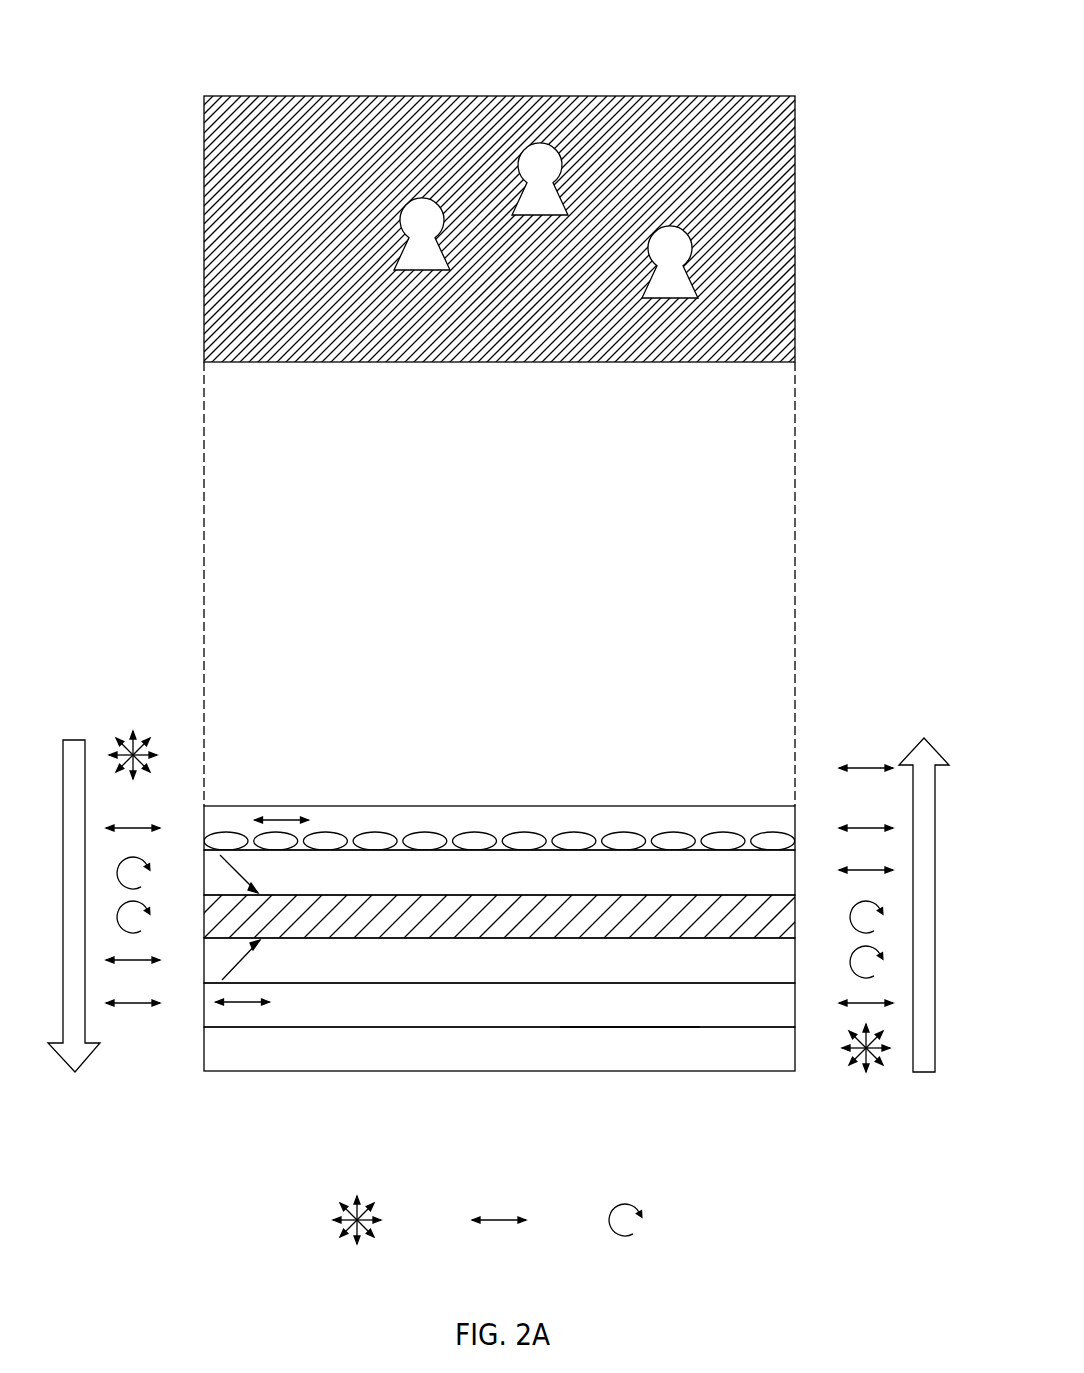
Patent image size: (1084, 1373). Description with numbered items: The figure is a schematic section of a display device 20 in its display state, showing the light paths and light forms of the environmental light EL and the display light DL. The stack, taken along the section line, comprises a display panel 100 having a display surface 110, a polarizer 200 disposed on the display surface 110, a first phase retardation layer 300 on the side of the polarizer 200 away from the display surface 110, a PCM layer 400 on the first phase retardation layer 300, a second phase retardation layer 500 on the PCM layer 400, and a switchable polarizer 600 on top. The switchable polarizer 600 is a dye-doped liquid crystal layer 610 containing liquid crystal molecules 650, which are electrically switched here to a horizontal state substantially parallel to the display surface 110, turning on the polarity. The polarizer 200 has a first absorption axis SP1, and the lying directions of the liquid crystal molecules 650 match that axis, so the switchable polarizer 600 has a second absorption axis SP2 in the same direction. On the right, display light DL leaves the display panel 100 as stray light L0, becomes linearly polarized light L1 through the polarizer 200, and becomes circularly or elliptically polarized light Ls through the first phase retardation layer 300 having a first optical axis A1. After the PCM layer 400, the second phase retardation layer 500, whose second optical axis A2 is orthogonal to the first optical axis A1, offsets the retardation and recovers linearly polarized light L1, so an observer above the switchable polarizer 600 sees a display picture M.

The display device 20 is at (252, 27).
The display panel 100 is at (520, 1064).
The display surface 110 is at (602, 1026).
The polarizer 200 is at (520, 1021).
The first phase retardation layer 300 is at (520, 976).
The PCM layer 400 is at (520, 931).
The second phase retardation layer 500 is at (520, 888).
The switchable polarizer 600 is at (499, 806).
The dye-doped liquid crystal layer 610 is at (499, 828).
The liquid crystal molecules 650 is at (623, 840).
The display picture M is at (676, 182).
The environmental light EL is at (104, 885).
The display light DL is at (894, 925).
The first absorption axis SP1 is at (242, 1005).
The second absorption axis SP2 is at (282, 817).
The first optical axis A1 is at (246, 960).
The second optical axis A2 is at (247, 871).
The stray light L0 is at (382, 1220).
The linearly polarized light L1 is at (522, 1221).
The circularly polarized light or elliptically polarized light Ls is at (646, 1221).